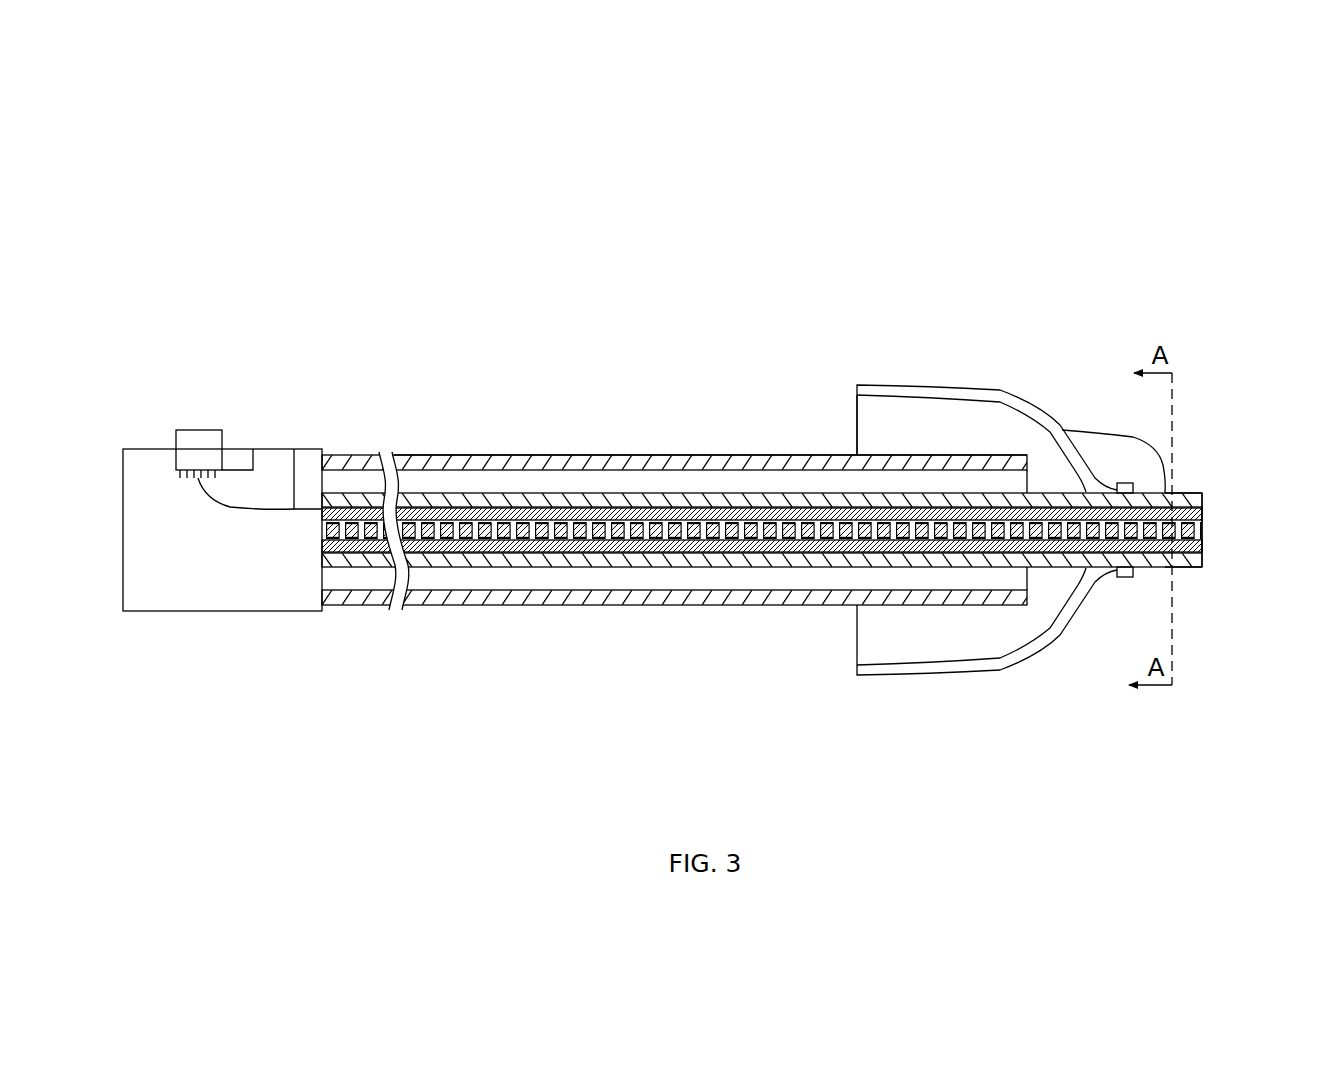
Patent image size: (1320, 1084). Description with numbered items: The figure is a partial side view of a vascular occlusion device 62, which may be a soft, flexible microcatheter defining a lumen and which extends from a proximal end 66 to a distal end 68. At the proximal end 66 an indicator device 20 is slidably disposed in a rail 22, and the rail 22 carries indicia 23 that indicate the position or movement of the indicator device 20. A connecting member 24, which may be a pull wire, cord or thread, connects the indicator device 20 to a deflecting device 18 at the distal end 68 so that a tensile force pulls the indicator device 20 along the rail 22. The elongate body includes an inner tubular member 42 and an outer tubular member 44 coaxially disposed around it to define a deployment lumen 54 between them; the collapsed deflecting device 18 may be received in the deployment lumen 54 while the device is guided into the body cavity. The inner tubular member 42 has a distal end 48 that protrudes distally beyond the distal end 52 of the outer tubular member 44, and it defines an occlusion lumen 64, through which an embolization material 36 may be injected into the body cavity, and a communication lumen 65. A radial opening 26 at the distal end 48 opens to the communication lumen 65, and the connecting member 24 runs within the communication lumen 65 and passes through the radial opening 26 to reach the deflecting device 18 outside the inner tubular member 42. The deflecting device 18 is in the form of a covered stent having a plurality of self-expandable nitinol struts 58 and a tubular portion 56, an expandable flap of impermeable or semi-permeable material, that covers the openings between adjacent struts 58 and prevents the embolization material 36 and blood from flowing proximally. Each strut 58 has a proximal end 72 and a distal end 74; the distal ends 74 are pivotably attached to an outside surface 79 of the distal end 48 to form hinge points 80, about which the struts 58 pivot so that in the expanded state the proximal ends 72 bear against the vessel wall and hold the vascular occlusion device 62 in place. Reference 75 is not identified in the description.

The deflecting device 18 is at (987, 352).
The indicator device 20 is at (207, 430).
The rail 22 is at (234, 468).
The indicia 23 is at (175, 477).
The connecting member 24 is at (296, 455).
The radial opening 26 is at (1170, 493).
The embolization material 36 is at (483, 518).
The inner tubular member 42 is at (562, 568).
The outer tubular member 44 is at (437, 606).
The distal end of inner tubular member 48 is at (1185, 568).
The distal end of outer tubular member 52 is at (993, 453).
The deployment lumen 54 is at (669, 484).
The tubular portion 56 is at (857, 420).
The struts 58 is at (905, 385).
The vascular occlusion device 62 is at (693, 226).
The occlusion lumen 64 is at (663, 540).
The communication lumen 65 is at (772, 508).
The proximal end 66 is at (191, 630).
The distal end 68 is at (1197, 638).
The proximal end of strut 72 is at (860, 683).
The distal end of strut 74 is at (1128, 588).
The outer surface 75 is at (565, 455).
The outside surface 79 is at (1190, 493).
The hinge points 80 is at (1119, 483).